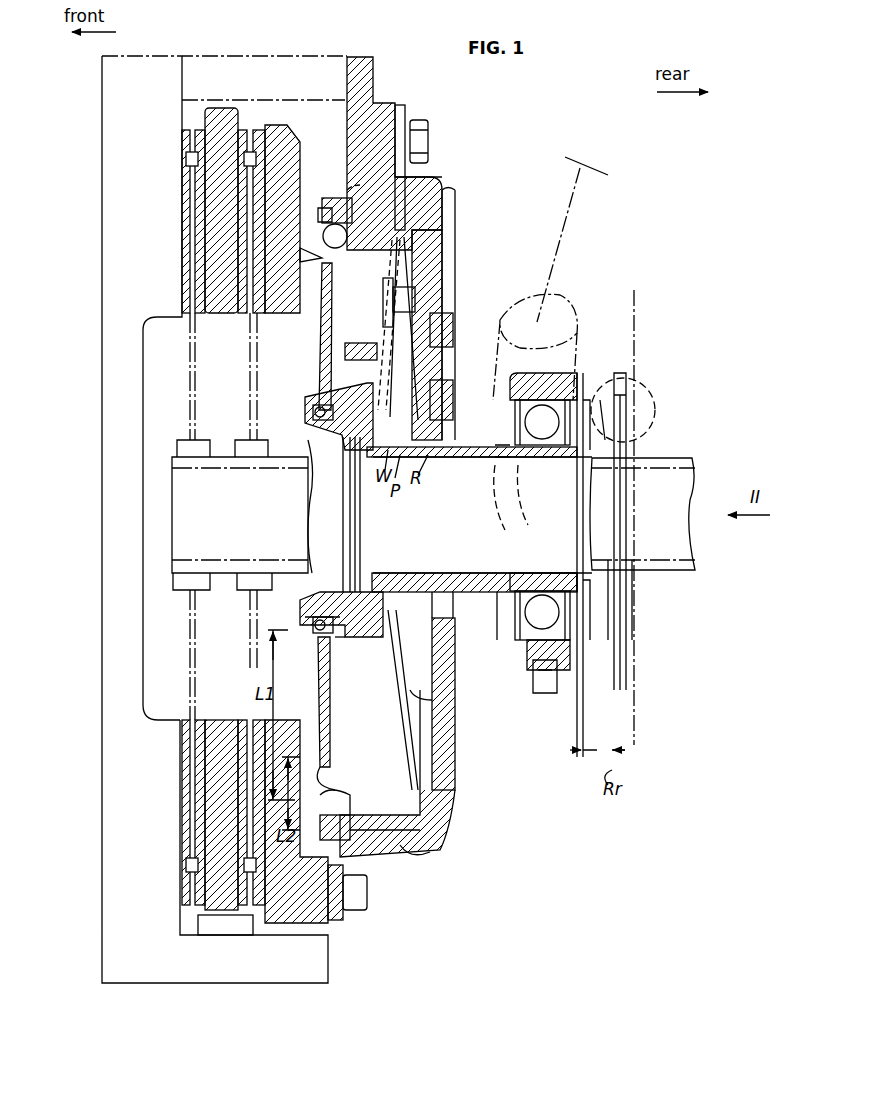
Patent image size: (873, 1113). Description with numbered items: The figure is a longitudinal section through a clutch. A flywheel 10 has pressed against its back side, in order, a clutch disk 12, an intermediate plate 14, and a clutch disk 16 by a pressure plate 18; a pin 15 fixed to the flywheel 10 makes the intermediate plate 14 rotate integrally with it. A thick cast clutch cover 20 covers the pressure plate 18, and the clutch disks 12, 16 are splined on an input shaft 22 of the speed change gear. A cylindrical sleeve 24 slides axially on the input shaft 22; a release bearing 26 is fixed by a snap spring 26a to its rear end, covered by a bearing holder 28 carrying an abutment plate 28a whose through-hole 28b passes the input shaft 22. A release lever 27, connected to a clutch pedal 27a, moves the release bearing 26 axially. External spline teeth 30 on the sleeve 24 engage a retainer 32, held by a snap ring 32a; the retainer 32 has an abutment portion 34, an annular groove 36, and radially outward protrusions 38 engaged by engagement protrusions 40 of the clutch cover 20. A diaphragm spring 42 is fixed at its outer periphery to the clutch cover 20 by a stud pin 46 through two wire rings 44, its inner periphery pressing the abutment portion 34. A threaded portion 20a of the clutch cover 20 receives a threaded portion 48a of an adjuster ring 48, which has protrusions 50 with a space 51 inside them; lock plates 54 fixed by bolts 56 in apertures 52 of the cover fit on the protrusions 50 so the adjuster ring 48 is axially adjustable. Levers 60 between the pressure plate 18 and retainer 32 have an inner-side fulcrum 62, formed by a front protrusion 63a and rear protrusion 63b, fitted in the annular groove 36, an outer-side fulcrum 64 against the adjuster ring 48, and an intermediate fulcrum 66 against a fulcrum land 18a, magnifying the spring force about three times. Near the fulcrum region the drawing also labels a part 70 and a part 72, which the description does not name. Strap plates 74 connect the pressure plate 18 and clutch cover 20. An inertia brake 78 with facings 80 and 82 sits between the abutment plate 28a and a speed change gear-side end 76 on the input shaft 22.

The flywheel 10 is at (140, 55).
The clutch disk 12 is at (192, 330).
The intermediate plate 14 is at (221, 509).
The pin 15 is at (198, 923).
The clutch disk 16 is at (258, 330).
The pressure plate 18 is at (296, 524).
The fulcrum land 18a is at (325, 207).
The clutch cover 20 is at (455, 218).
The threaded portion 20a is at (435, 855).
The input shaft 22 is at (222, 580).
The sleeve 24 is at (498, 593).
The release bearing 26 is at (560, 640).
The snap spring 26a is at (580, 590).
The release lever 27 is at (500, 470).
The clutch pedal 27a is at (605, 170).
The bearing holder 28 is at (585, 660).
The abutment plate 28a is at (582, 650).
The through-hole 28b is at (610, 590).
The external spline teeth 30 is at (462, 595).
The retainer 32 is at (338, 637).
The snap ring 32a is at (405, 558).
The abutment portion 34 is at (390, 630).
The annular groove 36 is at (313, 635).
The protrusions 38 is at (360, 343).
The engagement protrusions 40 is at (425, 400).
The diaphragm spring 42 is at (440, 705).
The wire rings 44 is at (412, 262).
The stud pin 46 is at (383, 290).
The adjuster ring 48 is at (351, 815).
The threaded portion 48a is at (400, 855).
The protrusions 50 is at (440, 195).
The space 51 is at (412, 245).
The apertures 52 is at (445, 200).
The lock plate 54 is at (420, 180).
The bolt 56 is at (428, 140).
The lever 60 is at (318, 355).
The inner-side fulcrum 62 is at (312, 404).
The front protrusion 63a is at (312, 620).
The rear protrusion 63b is at (335, 640).
The outer-side fulcrum 64 is at (328, 197).
The intermediate fulcrum 66 is at (335, 258).
The spring outer end 70 is at (320, 280).
The strap 72 is at (343, 185).
The strap plate 74 is at (332, 922).
The speed change gear-side end 76 is at (634, 292).
The inertia brake 78 is at (598, 392).
The facing 80 is at (632, 415).
The facing 82 is at (640, 392).